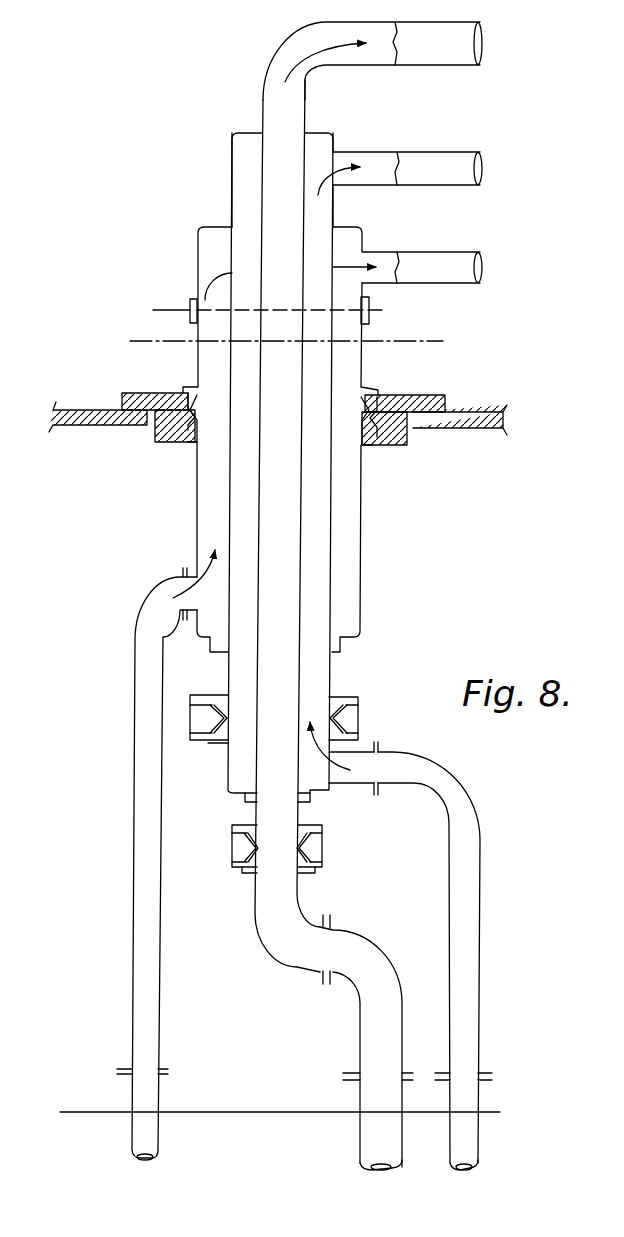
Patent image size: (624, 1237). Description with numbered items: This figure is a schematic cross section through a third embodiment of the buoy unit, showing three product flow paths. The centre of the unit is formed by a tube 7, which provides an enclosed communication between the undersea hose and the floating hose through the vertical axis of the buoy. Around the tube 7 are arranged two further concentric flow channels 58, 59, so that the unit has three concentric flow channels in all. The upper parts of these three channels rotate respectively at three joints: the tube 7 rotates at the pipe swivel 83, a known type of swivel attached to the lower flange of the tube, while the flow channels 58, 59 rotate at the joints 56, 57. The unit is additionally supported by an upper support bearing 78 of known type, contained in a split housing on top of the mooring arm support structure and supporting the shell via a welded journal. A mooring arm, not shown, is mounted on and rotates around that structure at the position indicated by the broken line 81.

The tube 7 is at (305, 497).
The joint 56 is at (333, 693).
The joint 57 is at (362, 390).
The flow channel 58 is at (333, 545).
The flow channel 59 is at (362, 587).
The upper support bearing 78 is at (165, 310).
The broken line 81 is at (423, 342).
The pipe swivel 83 is at (322, 848).